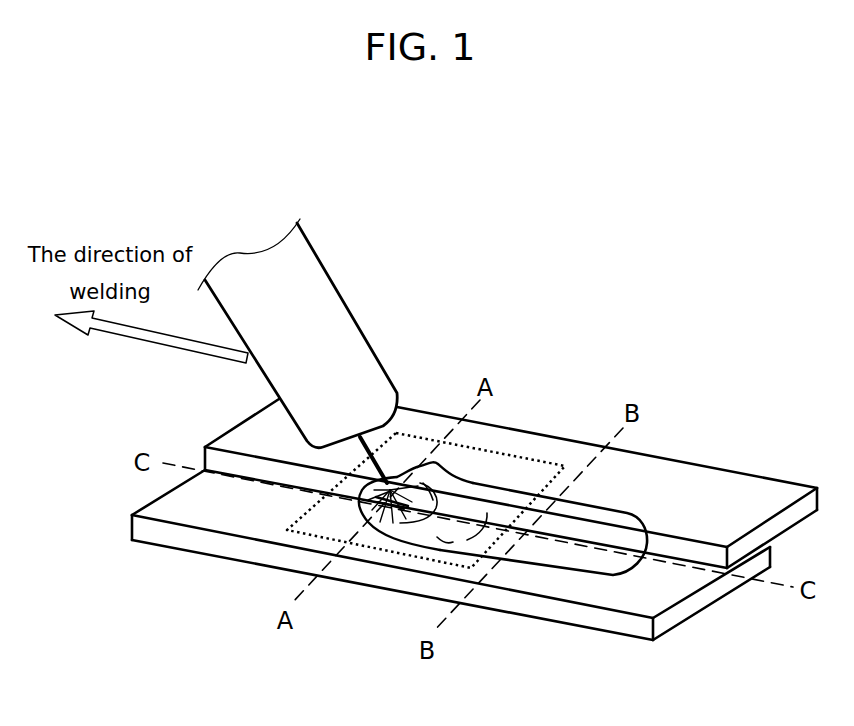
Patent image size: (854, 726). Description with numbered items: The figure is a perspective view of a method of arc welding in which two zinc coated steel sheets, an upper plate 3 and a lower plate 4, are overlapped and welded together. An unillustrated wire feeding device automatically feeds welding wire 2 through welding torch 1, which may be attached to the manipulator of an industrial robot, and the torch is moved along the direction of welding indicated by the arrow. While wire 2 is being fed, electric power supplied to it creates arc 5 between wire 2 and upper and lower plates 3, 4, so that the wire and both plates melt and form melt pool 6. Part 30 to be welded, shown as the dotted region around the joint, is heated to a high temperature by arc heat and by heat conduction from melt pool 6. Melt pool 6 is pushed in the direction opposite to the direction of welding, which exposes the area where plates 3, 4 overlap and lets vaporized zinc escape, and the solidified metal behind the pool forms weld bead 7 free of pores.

The welding torch 1 is at (332, 320).
The welding wire 2 is at (380, 460).
The upper plate 3 is at (267, 427).
The lower plate 4 is at (203, 513).
The arc 5 is at (368, 517).
The melt pool 6 is at (428, 533).
The weld bead 7 is at (553, 550).
The part to be welded 30 is at (508, 455).